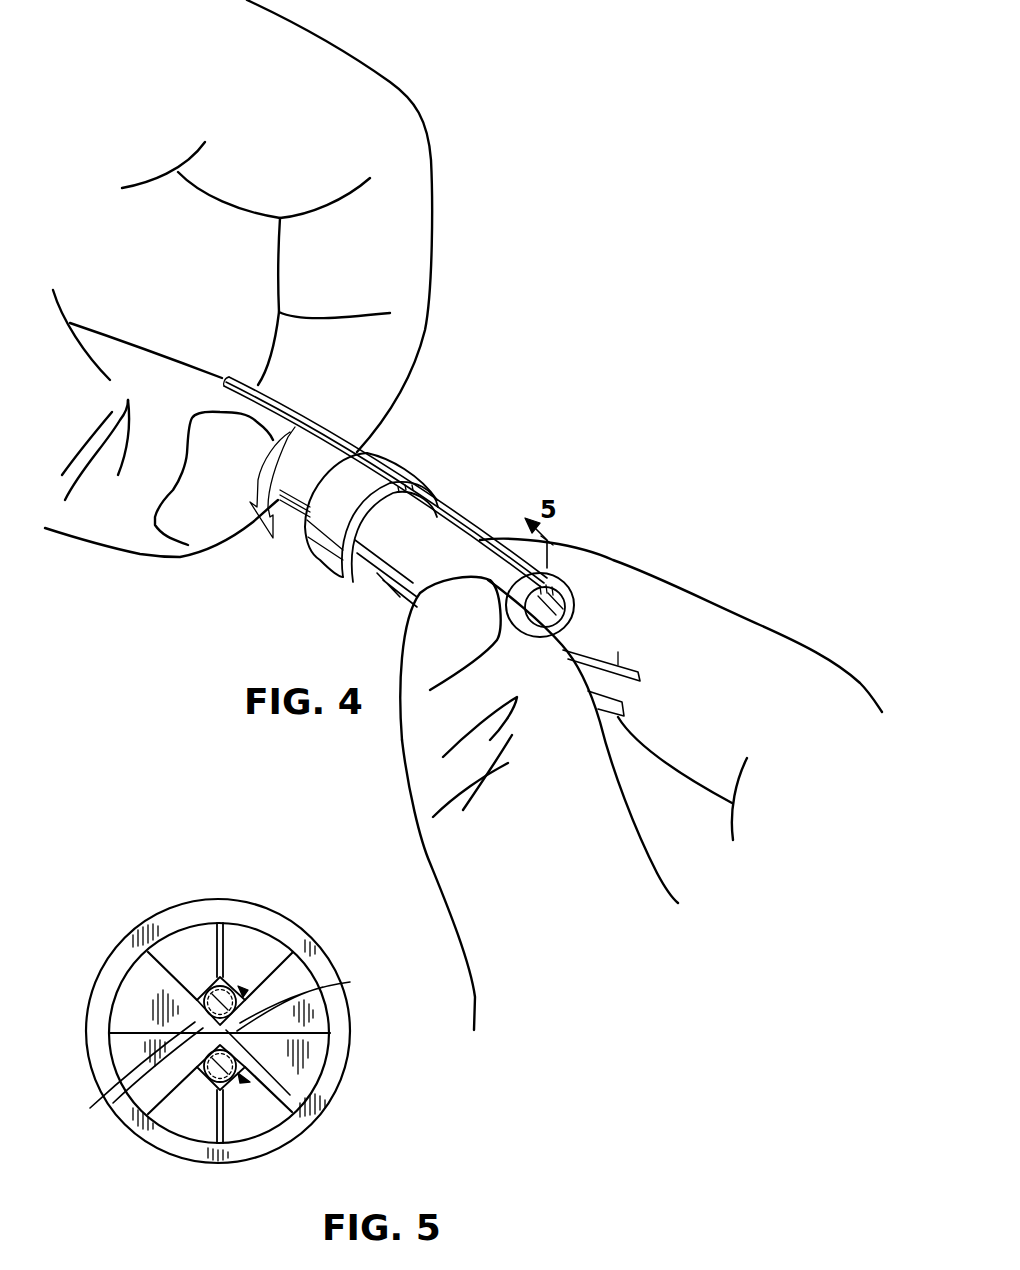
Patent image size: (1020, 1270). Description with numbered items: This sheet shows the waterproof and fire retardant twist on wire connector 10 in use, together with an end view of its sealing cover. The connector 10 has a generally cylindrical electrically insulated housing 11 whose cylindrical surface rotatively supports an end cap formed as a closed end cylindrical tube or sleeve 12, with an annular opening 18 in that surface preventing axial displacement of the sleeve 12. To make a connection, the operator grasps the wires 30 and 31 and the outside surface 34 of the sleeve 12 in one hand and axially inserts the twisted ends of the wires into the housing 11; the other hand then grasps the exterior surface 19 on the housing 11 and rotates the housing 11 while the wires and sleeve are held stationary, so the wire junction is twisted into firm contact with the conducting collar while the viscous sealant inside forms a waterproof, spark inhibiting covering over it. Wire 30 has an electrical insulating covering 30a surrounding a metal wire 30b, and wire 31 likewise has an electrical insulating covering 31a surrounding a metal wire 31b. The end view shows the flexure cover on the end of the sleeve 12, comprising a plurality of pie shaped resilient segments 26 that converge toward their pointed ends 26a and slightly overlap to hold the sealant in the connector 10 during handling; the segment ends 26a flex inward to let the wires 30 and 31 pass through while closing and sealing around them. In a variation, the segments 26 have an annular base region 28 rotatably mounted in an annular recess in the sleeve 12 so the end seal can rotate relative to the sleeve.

In FIG. 4, the twist on wire connector 10 is at (474, 443).
In FIG. 5, the twist on wire connector 10 is at (116, 913).
In FIG. 4, the housing 11 is at (226, 381).
In FIG. 4, the sleeve 12 is at (448, 530).
In FIG. 4, the annular opening 18 is at (333, 453).
In FIG. 4, the exterior surface 19 is at (378, 472).
In FIG. 4, the resilient segments 26 is at (560, 622).
In FIG. 5, the resilient segments 26 is at (198, 930).
In FIG. 5, the pointed end 26a is at (350, 982).
In FIG. 4, the annular base region 28 is at (560, 576).
In FIG. 5, the annular base region 28 is at (210, 1167).
In FIG. 4, the wire 30 is at (637, 671).
In FIG. 5, the wire 30 is at (297, 933).
In FIG. 5, the electrical insulating covering 30a is at (200, 997).
In FIG. 5, the metal wire 30b is at (232, 987).
In FIG. 4, the wire 31 is at (622, 699).
In FIG. 5, the wire 31 is at (297, 1138).
In FIG. 5, the electrical insulating covering 31a is at (196, 1022).
In FIG. 5, the metal wire 31b is at (228, 1085).
In FIG. 4, the outside surface 34 is at (398, 598).